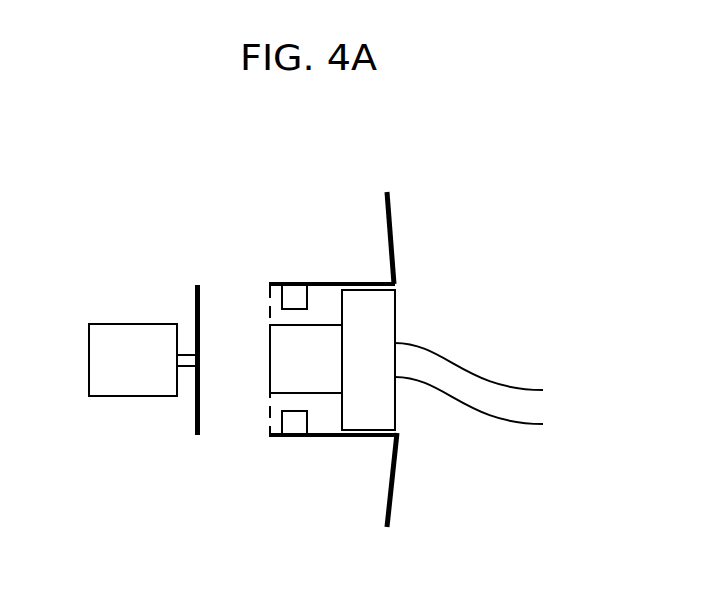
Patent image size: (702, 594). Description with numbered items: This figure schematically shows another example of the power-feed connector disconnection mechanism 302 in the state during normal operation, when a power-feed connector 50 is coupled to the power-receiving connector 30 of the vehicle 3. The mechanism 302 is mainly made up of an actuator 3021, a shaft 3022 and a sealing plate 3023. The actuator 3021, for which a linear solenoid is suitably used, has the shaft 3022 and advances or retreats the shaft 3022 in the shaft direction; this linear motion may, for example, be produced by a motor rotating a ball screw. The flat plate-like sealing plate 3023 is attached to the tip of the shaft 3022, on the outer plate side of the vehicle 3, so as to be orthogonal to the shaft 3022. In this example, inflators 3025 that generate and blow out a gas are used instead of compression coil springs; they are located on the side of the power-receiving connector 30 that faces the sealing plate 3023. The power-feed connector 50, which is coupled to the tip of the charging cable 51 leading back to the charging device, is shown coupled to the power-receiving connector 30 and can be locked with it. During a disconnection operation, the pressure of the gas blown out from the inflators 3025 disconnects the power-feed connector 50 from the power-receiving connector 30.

The vehicle 3 is at (390, 208).
The power-feed connector disconnection mechanism 302 is at (126, 185).
The actuator 3021 is at (121, 324).
The shaft 3022 is at (187, 352).
The sealing plate 3023 is at (195, 423).
The inflator 3025 is at (293, 295).
The power-receiving connector 30 is at (323, 335).
The power-feed connector 50 is at (370, 297).
The charging cable 51 is at (495, 387).